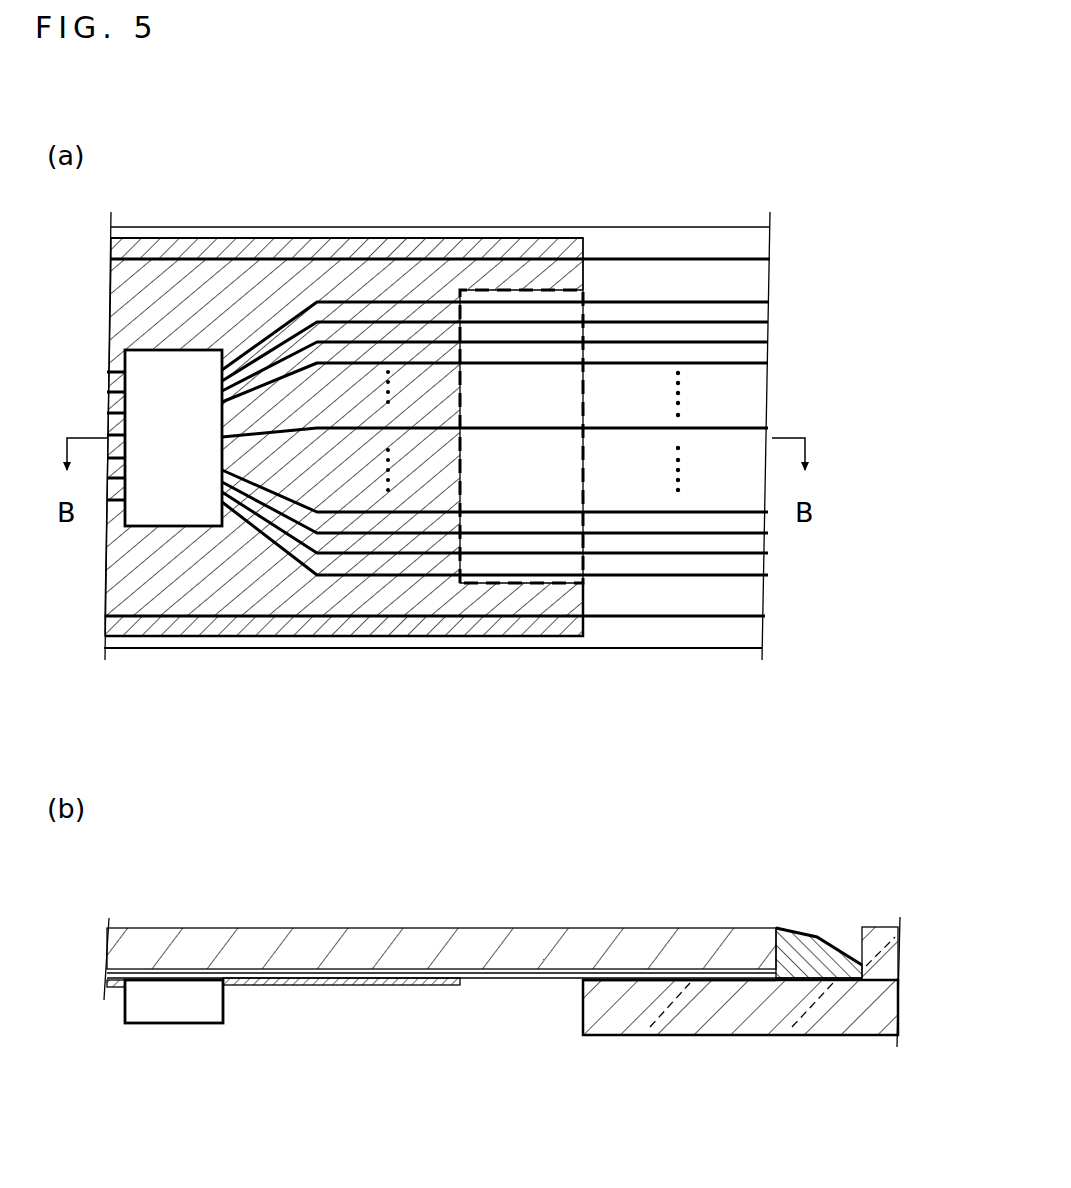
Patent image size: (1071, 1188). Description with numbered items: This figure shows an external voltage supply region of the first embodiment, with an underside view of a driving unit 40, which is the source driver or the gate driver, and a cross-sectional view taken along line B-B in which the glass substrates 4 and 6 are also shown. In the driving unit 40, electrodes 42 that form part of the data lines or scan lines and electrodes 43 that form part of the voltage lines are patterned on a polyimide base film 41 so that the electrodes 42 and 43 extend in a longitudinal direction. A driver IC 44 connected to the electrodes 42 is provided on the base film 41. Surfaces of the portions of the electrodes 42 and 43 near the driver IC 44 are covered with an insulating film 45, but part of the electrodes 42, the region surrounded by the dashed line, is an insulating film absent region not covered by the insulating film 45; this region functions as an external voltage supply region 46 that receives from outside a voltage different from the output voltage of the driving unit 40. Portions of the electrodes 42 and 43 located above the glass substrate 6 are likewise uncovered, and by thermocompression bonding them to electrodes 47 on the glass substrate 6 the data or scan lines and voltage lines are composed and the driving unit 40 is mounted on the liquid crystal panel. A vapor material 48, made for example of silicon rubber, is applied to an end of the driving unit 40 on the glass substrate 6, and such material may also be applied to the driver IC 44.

The glass substrate 4 is at (887, 930).
The glass substrate 6 is at (683, 1028).
The driving unit 40 is at (616, 227).
The polyimide base film 41 is at (700, 238).
The electrodes 42 is at (383, 300).
The electrodes 43 is at (245, 240).
The driver IC 44 is at (140, 350).
The insulating film 45 is at (205, 632).
The external voltage supply region 46 is at (523, 585).
The electrodes 47 is at (640, 982).
The vapor material 48 is at (818, 940).